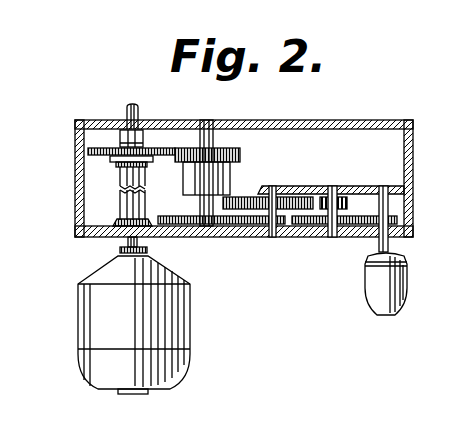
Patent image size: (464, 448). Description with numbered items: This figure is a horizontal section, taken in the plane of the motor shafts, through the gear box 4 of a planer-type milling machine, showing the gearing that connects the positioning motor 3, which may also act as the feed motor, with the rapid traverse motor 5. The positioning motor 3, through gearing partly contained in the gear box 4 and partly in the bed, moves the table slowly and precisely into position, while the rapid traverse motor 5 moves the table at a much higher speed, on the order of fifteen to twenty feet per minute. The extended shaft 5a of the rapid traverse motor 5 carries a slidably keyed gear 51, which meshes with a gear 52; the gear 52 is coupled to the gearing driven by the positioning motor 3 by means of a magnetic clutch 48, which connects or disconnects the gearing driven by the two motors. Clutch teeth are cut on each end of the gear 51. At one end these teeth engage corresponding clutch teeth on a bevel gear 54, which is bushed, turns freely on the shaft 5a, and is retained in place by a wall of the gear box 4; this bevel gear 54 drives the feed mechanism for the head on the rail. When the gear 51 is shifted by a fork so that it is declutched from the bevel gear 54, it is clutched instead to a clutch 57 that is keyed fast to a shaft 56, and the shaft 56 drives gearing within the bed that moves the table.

The positioning motor 3 is at (365, 287).
The gear box 4 is at (244, 237).
The rapid traverse motor 5 is at (190, 322).
The extended shaft of motor 5 5a is at (127, 247).
The magnetic clutch 48 is at (228, 197).
The gear 51 is at (90, 150).
The gear 52 is at (239, 157).
The bevel gear 54 is at (120, 202).
The shaft 56 is at (138, 110).
The clutch 57 is at (118, 137).